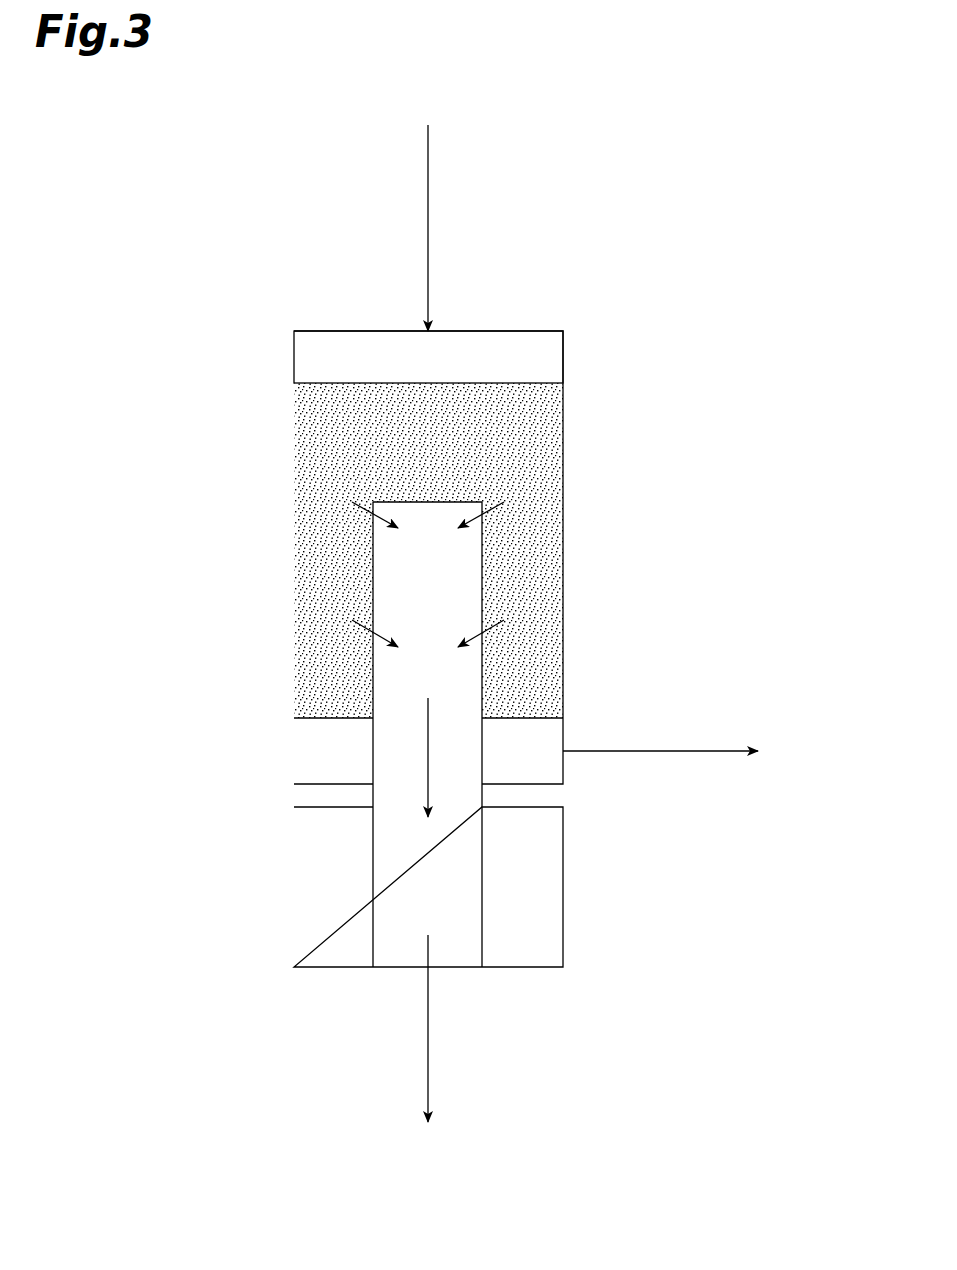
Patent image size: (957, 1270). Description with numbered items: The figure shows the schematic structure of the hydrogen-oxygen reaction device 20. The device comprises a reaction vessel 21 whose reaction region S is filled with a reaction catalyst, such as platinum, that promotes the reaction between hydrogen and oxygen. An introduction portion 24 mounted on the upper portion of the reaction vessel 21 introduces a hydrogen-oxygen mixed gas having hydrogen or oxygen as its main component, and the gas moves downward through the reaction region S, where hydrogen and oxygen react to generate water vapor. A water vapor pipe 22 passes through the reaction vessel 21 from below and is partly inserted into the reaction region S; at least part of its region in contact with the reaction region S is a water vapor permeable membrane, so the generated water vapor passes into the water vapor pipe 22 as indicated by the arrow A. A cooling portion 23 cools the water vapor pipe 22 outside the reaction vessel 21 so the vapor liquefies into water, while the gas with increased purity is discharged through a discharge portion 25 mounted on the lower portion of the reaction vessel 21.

The hydrogen-oxygen reaction device 20 is at (740, 207).
The reaction vessel 21 is at (563, 353).
The water vapor pipe 22 is at (485, 538).
The cooling portion 23 is at (563, 907).
The introduction portion 24 is at (429, 262).
The discharge portion 25 is at (625, 755).
The reaction region S is at (563, 448).
The arrow A is at (495, 617).